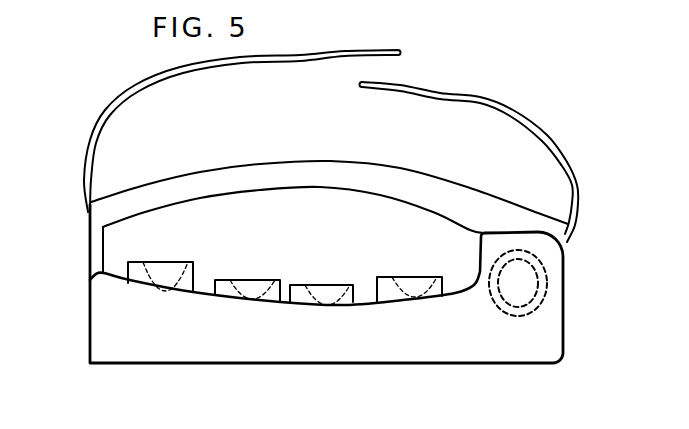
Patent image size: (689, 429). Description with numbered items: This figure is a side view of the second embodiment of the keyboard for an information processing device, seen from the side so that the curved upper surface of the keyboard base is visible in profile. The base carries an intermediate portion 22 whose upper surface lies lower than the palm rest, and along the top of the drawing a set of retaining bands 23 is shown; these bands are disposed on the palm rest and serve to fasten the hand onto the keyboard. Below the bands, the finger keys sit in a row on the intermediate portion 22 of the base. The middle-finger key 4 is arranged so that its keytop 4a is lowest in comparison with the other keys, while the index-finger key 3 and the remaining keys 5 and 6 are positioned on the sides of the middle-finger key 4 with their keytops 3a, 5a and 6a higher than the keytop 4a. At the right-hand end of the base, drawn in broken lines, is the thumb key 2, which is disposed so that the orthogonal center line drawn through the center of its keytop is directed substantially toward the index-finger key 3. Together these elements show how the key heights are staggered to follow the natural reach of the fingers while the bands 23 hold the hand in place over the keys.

The thumb key 2 is at (537, 252).
The index-finger key 3 is at (413, 302).
The middle-finger key 4 is at (333, 305).
The key 5 is at (258, 302).
The key 6 is at (172, 293).
The keytop 3a is at (413, 277).
The keytop 4a is at (328, 285).
The keytop 5a is at (252, 280).
The keytop 6a is at (170, 262).
The intermediate portion 22 is at (138, 198).
The retaining bands 23 is at (497, 105).